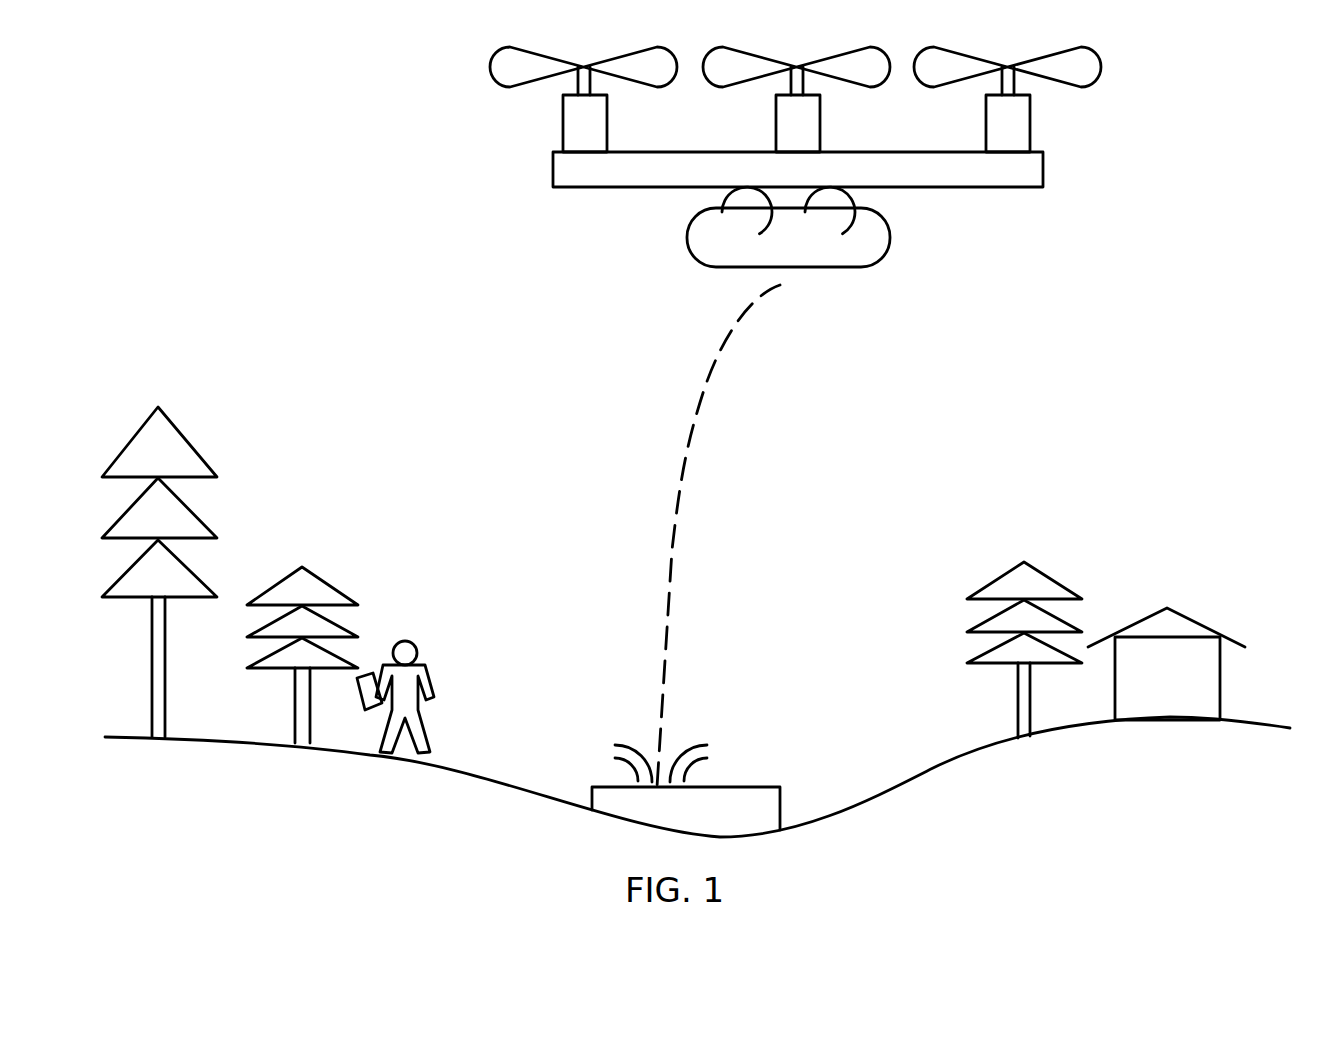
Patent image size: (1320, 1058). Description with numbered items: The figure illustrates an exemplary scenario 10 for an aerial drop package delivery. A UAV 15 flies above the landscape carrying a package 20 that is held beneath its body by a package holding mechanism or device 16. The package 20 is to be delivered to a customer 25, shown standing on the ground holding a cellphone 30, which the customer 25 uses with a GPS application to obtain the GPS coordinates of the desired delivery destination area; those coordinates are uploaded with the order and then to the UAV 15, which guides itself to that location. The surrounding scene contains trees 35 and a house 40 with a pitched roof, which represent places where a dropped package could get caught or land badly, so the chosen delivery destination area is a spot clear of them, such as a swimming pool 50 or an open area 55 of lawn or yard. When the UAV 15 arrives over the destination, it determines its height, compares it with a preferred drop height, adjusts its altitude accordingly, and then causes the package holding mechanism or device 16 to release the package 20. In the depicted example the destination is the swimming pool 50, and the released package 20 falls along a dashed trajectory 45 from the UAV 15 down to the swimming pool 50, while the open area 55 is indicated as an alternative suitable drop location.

The scenario 10 is at (250, 185).
The UAV 15 is at (550, 177).
The package holding mechanism or device 16 is at (857, 193).
The package 20 is at (687, 243).
The customer 25 is at (433, 667).
The cellphone 30 is at (372, 675).
The trees 35 is at (177, 410).
The house 40 is at (1182, 613).
The trajectory 45 is at (703, 417).
The swimming pool 50 is at (686, 787).
The open area 55 is at (897, 733).